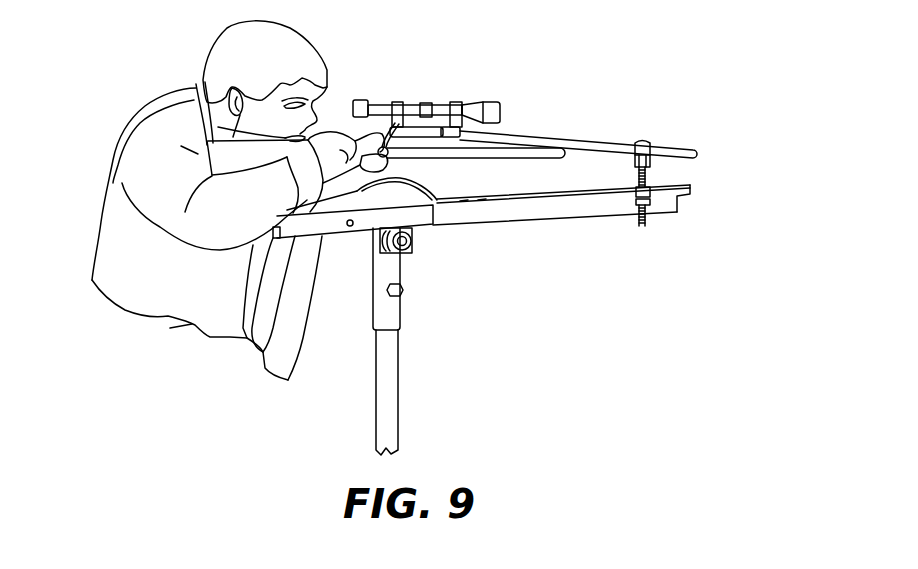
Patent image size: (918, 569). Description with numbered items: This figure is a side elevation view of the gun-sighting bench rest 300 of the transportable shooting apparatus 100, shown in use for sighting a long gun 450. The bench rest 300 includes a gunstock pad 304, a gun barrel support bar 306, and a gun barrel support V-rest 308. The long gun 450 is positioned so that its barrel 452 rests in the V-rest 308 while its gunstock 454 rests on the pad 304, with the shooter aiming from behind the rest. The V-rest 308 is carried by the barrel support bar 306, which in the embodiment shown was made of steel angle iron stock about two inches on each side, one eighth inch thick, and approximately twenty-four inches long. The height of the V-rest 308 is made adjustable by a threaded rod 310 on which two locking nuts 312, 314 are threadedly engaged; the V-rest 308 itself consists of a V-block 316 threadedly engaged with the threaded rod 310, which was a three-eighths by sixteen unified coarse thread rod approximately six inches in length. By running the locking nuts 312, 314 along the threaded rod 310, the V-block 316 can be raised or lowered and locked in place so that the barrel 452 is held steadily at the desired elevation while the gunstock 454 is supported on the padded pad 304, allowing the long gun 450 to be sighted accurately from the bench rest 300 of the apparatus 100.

The transportable shooting apparatus 100 is at (523, 270).
The gun-sighting bench rest 300 is at (440, 249).
The gunstock pad 304 is at (410, 193).
The gun barrel support bar 306 is at (535, 216).
The gun barrel support V-rest 308 is at (665, 182).
The threaded rod 310 is at (636, 175).
The locking nut 312 is at (651, 190).
The locking nut 314 is at (640, 218).
The V-block 316 is at (637, 140).
The long gun 450 is at (530, 90).
The barrel 452 is at (672, 148).
The gunstock 454 is at (207, 145).